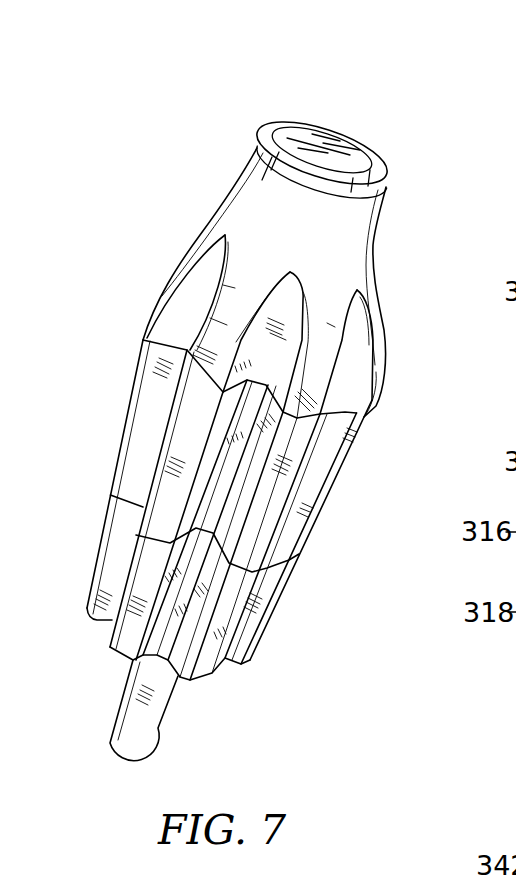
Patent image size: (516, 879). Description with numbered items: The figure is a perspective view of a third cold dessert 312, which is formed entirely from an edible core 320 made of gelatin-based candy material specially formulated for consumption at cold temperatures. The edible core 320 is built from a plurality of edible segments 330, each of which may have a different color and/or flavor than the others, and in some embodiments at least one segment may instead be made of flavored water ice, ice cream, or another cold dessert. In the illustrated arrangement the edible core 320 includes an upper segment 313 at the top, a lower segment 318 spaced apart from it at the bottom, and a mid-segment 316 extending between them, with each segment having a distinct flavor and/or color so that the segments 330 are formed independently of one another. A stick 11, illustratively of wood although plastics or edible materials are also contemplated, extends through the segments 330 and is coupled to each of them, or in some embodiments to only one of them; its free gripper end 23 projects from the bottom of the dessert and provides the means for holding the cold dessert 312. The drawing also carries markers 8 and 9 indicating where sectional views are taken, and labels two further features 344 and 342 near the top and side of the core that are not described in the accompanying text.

The third cold dessert 312 is at (183, 128).
The end cap 344 is at (287, 128).
The upper segment 313 is at (381, 257).
The edible segments 330 is at (149, 257).
The edible core 320 is at (396, 368).
The slot 342 is at (381, 378).
The mid-segment 316 is at (106, 481).
The lower segment 318 is at (300, 617).
The stick 11 is at (164, 721).
The gripper end 23 is at (112, 690).
The section line 8- 8 is at (387, 103).
The section line 9- 9 is at (83, 417).